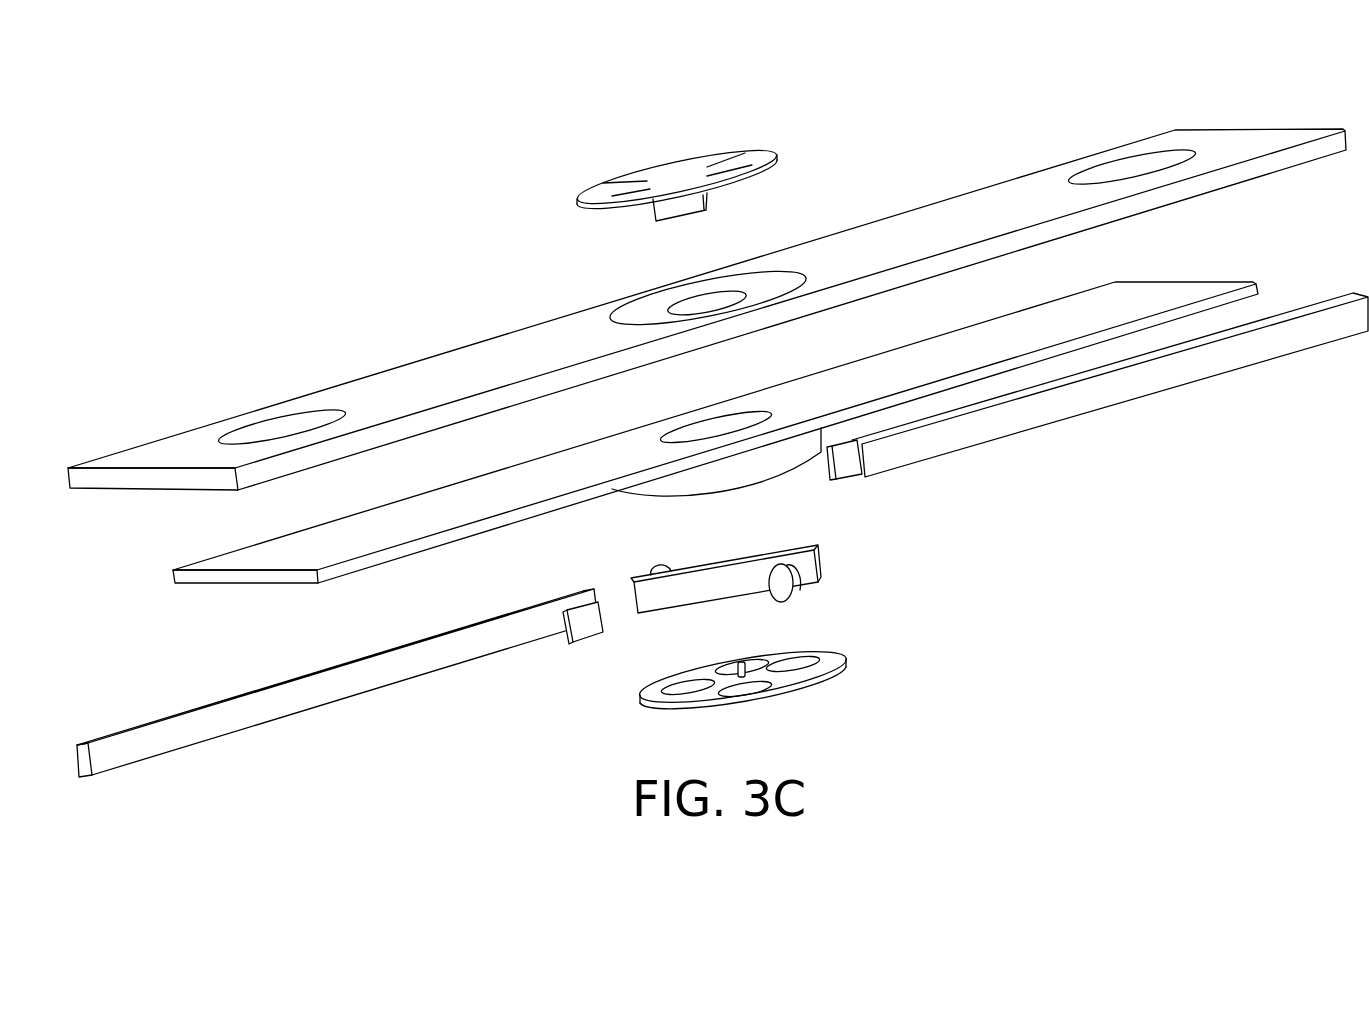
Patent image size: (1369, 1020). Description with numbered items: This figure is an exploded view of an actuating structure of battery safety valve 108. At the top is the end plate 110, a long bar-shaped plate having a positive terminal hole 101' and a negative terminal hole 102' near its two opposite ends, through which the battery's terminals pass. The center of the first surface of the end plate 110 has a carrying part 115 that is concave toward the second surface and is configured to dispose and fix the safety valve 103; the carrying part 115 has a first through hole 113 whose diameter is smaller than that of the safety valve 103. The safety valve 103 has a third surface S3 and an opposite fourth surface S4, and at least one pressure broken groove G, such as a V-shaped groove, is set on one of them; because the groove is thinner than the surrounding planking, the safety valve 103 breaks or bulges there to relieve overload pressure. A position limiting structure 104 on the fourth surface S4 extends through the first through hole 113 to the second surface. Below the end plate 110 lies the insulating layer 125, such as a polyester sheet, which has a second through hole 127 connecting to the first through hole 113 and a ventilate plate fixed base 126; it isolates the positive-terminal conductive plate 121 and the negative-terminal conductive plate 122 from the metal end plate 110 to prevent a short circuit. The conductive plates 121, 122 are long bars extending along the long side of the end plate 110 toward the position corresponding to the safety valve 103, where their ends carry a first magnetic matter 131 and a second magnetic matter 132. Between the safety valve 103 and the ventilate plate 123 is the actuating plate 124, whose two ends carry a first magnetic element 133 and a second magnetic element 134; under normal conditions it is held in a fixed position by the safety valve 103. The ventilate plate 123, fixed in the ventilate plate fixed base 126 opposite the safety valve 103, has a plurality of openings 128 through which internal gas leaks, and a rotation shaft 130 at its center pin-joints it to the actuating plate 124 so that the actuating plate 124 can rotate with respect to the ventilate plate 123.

The actuating structure of battery safety valve 108 is at (92, 111).
The end plate 110 is at (938, 214).
The positive terminal hole 101' is at (281, 407).
The negative terminal hole 102' is at (1131, 147).
The safety valve 103 is at (680, 182).
The position limiting structure 104 is at (708, 200).
The first through hole 113 is at (708, 300).
The carrying part 115 is at (640, 318).
The third surface S3 is at (596, 190).
The fourth surface S4 is at (627, 212).
The pressure broken groove G is at (629, 183).
The insulating layer 125 is at (527, 470).
The second through hole 127 is at (716, 427).
The ventilate plate fixed base 126 is at (722, 472).
The positive-terminal conductive plate 121 is at (490, 638).
The negative-terminal conductive plate 122 is at (915, 447).
The first magnetic matter 131 is at (587, 628).
The second magnetic matter 132 is at (845, 466).
The actuating plate 124 is at (697, 580).
The first magnetic element 133 is at (657, 571).
The second magnetic element 134 is at (784, 564).
The ventilate plate 123 is at (793, 655).
The openings 128 is at (740, 692).
The rotation shaft 130 is at (740, 660).